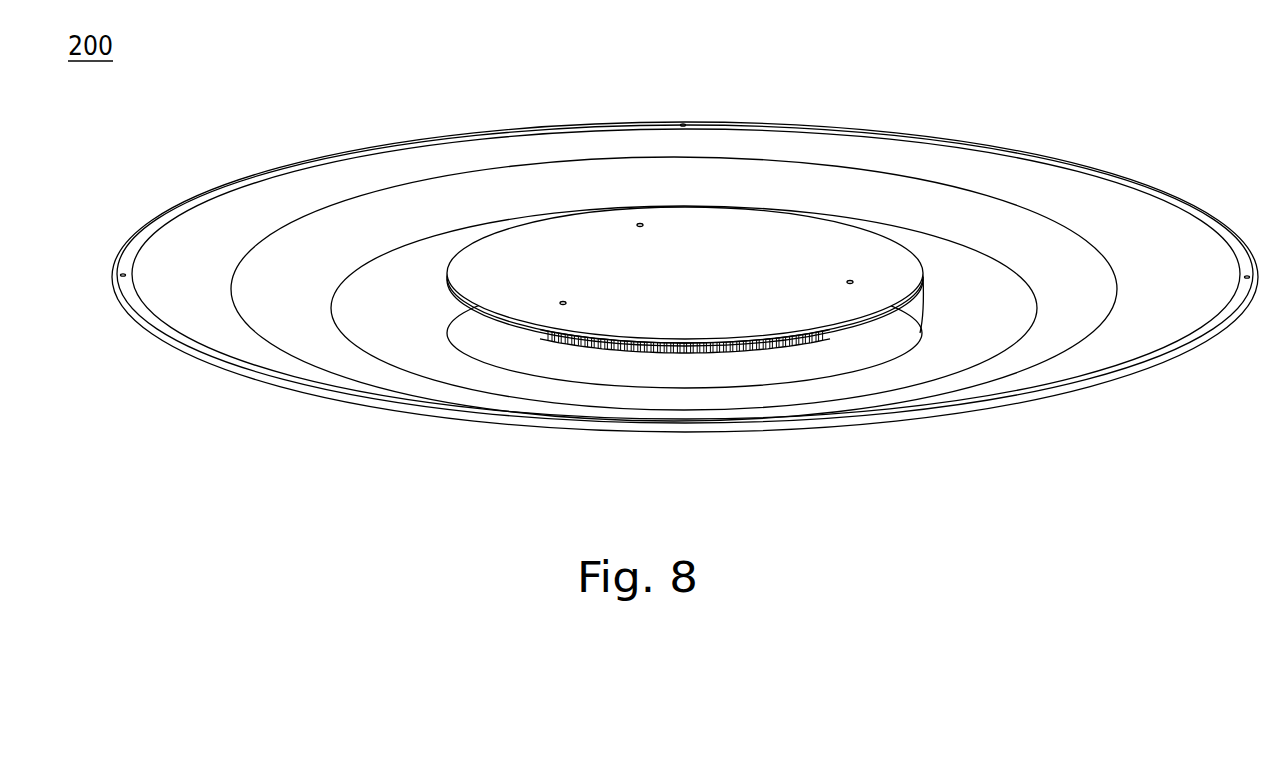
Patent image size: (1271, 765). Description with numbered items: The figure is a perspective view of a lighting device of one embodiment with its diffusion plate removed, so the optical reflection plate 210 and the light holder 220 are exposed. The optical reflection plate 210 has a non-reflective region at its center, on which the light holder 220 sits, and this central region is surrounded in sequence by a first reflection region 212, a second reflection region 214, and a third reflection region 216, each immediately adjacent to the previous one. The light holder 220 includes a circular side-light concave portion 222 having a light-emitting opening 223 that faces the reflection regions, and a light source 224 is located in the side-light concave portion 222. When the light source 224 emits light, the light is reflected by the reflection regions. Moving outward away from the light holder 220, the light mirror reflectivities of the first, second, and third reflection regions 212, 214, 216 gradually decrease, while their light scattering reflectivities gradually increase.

The optical reflection plate 210 is at (1143, 181).
The first reflection region 212 is at (413, 303).
The second reflection region 214 is at (358, 233).
The third reflection region 216 is at (210, 240).
The light holder 220 is at (697, 222).
The side-light concave portion 222 is at (853, 346).
The light-emitting opening 223 is at (927, 303).
The light source 224 is at (675, 350).